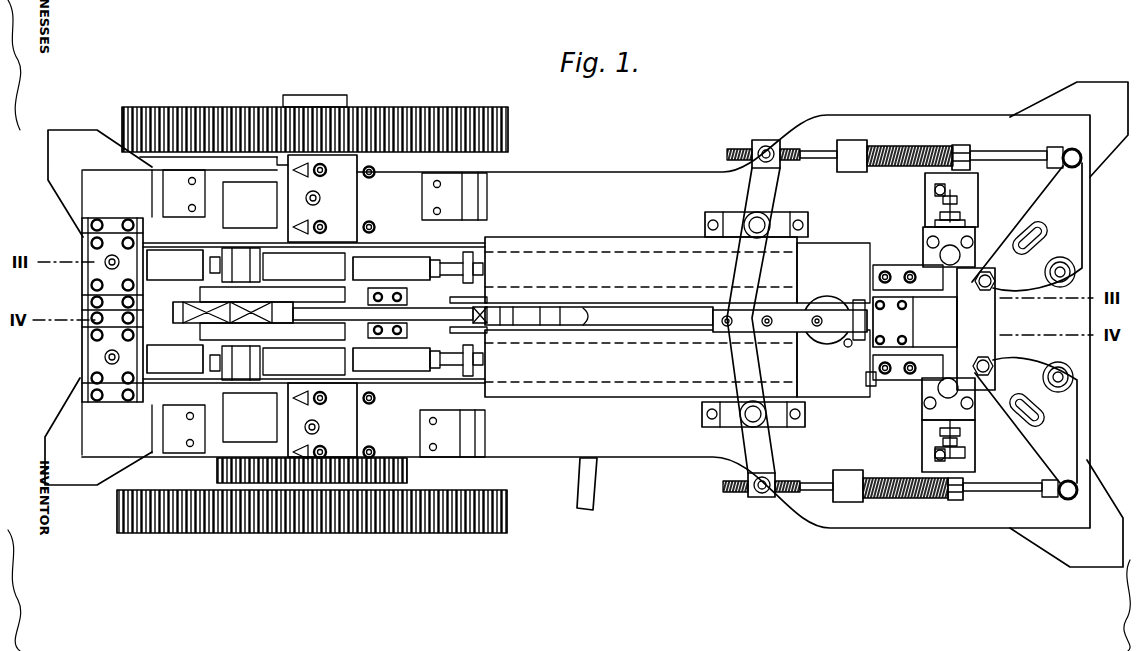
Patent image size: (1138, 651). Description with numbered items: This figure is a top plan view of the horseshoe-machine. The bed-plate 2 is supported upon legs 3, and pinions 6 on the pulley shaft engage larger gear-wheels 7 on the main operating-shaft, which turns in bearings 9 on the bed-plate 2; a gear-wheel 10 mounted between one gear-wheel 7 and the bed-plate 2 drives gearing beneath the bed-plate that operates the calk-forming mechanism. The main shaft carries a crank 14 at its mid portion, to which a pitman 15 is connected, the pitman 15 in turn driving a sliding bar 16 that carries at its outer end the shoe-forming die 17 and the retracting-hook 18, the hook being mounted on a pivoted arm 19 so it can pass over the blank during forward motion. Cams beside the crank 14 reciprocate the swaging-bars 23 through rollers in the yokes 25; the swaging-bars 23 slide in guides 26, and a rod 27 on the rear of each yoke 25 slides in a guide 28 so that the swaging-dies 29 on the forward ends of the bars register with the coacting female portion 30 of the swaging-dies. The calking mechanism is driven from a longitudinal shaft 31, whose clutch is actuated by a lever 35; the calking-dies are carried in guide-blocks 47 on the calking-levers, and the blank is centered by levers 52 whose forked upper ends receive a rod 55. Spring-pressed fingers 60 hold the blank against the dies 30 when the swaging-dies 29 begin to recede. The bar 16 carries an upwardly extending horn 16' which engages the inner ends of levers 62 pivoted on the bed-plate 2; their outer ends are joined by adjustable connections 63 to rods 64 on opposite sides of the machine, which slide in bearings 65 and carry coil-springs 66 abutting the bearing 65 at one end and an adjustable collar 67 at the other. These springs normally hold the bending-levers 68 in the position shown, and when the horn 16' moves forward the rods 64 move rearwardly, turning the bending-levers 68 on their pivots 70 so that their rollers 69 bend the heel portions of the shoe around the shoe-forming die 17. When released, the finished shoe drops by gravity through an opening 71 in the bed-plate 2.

The bed-plate 2 is at (586, 321).
The legs 3 is at (586, 324).
The pinions 6 is at (318, 117).
The gear-wheels 7 is at (435, 122).
The bearings 9 is at (326, 307).
The gear-wheel 10 is at (408, 472).
The crank 14 is at (207, 331).
The pitman 15 is at (436, 316).
The sliding bar 16 is at (581, 315).
The horn 16' is at (573, 338).
The shoe-forming die 17 is at (834, 300).
The retracting-hook 18 is at (860, 312).
The pivoted arm 19 is at (798, 295).
The swaging-bars 23 is at (833, 320).
The yokes 25 is at (346, 314).
The guides 26 is at (641, 317).
The rod 27 is at (175, 311).
The guide 28 is at (93, 257).
The swaging-dies 29 is at (908, 322).
The female portion of the swaging-dies 30 is at (976, 329).
The longitudinal shaft 31 is at (872, 387).
The lever 35 is at (598, 501).
The guide-blocks 47 is at (928, 232).
The levers 52 is at (937, 188).
The rod 55 is at (958, 203).
The spring-pressed fingers 60 is at (915, 321).
The levers 62 is at (745, 264).
The adjustable connections 63 is at (762, 146).
The rods 64 is at (813, 150).
The bearings 65 is at (853, 146).
The coil-springs 66 is at (910, 148).
The adjustable collar 67 is at (962, 148).
The bending-levers 68 is at (1027, 324).
The rollers 69 is at (995, 288).
The pivots 70 is at (1075, 267).
The opening 71 is at (848, 348).